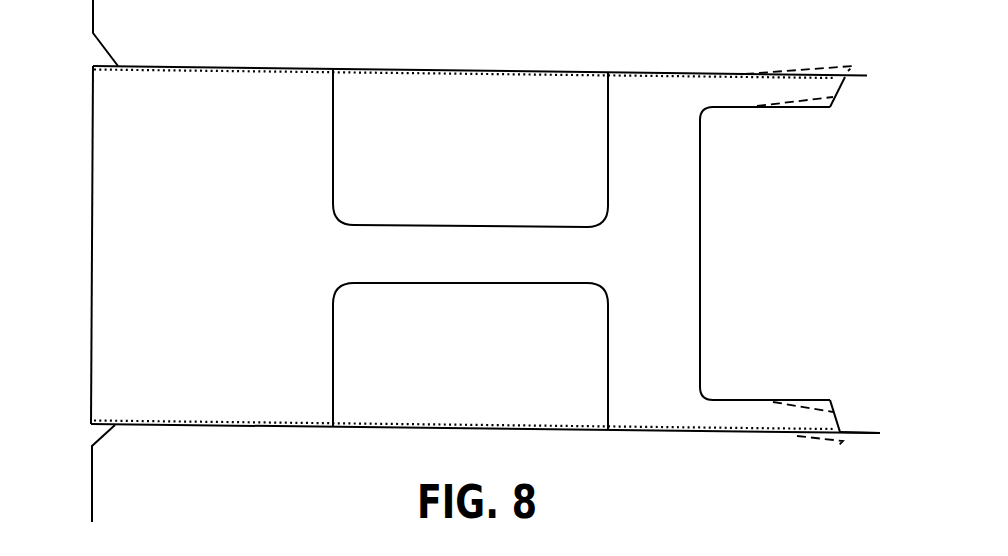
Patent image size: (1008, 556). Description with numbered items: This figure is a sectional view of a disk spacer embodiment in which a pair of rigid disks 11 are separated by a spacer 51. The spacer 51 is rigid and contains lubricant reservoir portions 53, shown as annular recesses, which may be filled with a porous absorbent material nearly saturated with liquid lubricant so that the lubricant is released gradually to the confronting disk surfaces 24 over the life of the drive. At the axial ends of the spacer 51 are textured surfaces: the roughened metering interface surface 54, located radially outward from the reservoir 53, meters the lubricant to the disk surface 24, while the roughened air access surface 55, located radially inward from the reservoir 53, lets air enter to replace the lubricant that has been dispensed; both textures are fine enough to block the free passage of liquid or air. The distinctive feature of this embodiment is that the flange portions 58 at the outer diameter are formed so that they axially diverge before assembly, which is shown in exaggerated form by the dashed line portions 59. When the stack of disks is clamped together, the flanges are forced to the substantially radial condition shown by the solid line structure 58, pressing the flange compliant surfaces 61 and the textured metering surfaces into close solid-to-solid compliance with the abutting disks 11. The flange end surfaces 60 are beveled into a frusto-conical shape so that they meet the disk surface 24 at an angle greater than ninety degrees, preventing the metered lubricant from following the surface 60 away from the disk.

The rigid disk 11 is at (164, 39).
The disk surface 24 is at (863, 431).
The spacer 51 is at (85, 300).
The lubricant reservoir portion 53 is at (476, 162).
The metering interface surface 54 is at (658, 434).
The air access surface 55 is at (250, 428).
The flange portion 58 is at (810, 108).
The dashed line portion 59 is at (804, 70).
The flange end surface 60 is at (838, 87).
The flange compliant surface 61 is at (795, 435).